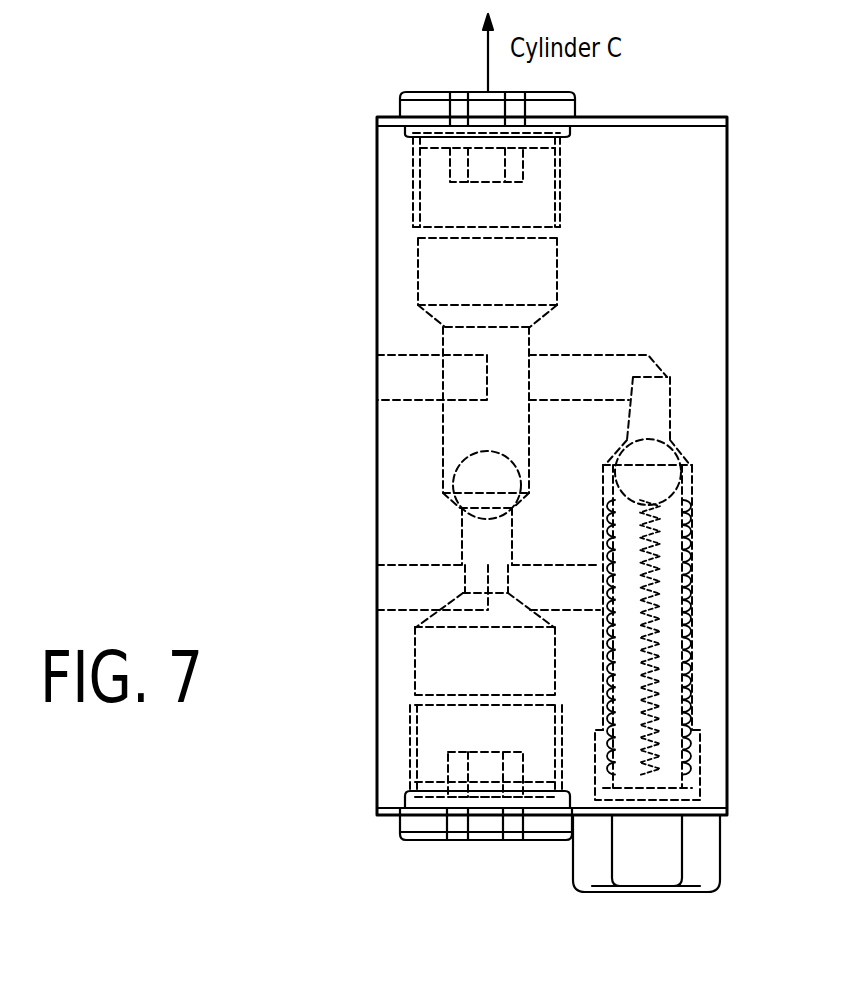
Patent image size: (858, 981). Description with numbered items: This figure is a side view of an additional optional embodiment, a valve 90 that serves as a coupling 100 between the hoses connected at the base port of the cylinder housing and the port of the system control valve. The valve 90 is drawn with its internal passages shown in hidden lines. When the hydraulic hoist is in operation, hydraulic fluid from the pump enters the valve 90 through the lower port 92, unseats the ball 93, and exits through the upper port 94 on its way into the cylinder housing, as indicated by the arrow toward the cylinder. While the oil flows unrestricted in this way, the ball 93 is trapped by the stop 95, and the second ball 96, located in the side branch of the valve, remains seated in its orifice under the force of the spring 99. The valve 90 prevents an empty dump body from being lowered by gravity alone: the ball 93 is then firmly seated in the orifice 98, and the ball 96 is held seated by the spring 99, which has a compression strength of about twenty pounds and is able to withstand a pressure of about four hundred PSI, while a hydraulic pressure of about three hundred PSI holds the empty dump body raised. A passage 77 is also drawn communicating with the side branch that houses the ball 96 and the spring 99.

The coupling 100 is at (727, 253).
The port 94 is at (453, 92).
The valve 90 is at (417, 270).
The stop 95 is at (407, 352).
The ball 93 is at (462, 463).
The orifice 98 is at (465, 532).
The port 92 is at (453, 840).
The passage 77 is at (650, 400).
The ball 96 is at (680, 487).
The spring 99 is at (648, 590).